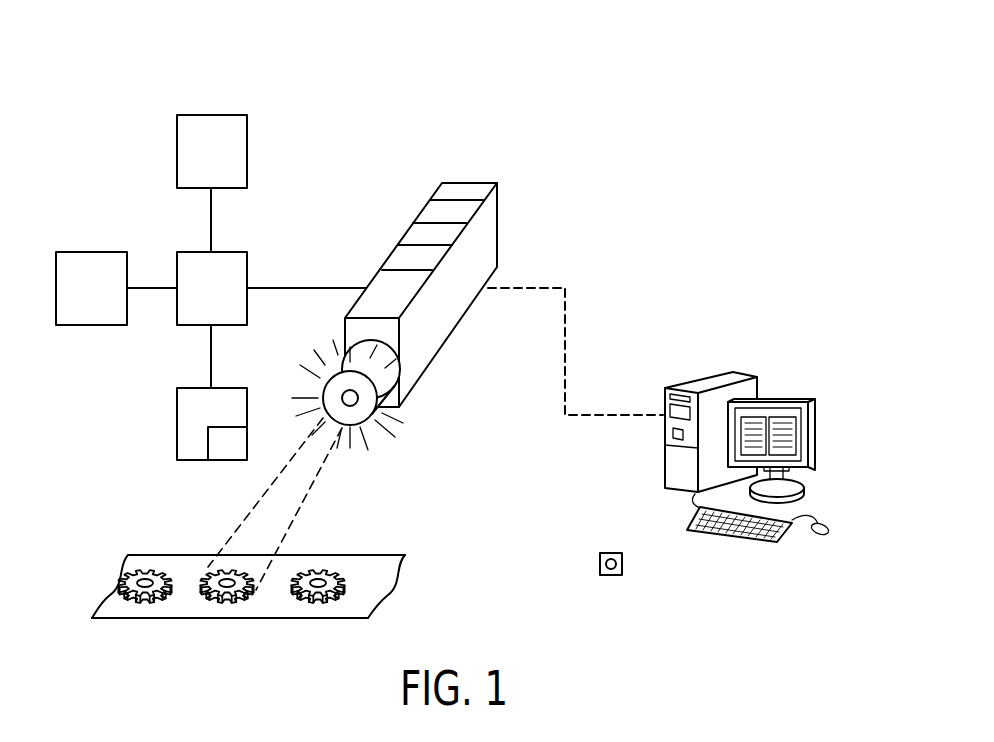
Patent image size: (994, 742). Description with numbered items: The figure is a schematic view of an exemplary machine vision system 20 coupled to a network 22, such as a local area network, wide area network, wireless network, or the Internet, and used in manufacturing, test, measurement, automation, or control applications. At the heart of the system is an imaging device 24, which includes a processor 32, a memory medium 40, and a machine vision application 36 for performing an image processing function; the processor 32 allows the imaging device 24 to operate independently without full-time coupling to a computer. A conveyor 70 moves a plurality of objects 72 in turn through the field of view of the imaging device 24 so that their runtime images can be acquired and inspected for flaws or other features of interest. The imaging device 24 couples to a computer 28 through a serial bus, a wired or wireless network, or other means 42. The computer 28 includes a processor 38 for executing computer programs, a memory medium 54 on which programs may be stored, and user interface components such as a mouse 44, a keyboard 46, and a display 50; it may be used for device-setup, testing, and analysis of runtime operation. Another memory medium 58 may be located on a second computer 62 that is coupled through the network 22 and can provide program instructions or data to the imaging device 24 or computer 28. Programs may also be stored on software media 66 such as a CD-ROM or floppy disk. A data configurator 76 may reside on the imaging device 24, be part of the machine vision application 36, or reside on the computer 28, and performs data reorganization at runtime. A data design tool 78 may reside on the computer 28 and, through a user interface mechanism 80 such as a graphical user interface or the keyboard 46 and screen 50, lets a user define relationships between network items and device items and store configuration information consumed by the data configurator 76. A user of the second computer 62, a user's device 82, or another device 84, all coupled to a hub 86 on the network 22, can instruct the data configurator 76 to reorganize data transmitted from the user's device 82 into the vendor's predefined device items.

The machine vision system 20 is at (593, 239).
The network 22 is at (313, 81).
The imaging device 24 is at (370, 278).
The computer 28 is at (752, 373).
The processor 32 is at (387, 257).
The machine vision application 36 is at (402, 233).
The processor 38 is at (737, 372).
The memory medium 40 is at (417, 212).
The other means 42 is at (565, 362).
The mouse 44 is at (822, 536).
The keyboard 46 is at (730, 540).
The display 50 is at (817, 443).
The memory medium 54 is at (713, 372).
The memory medium 58 is at (227, 448).
The second computer 62 is at (233, 388).
The software media 66 is at (600, 563).
The conveyor 70 is at (165, 620).
The objects 72 is at (145, 570).
The data configurator 76 is at (435, 190).
The data design tool 78 is at (697, 378).
The user interface mechanism 80 is at (795, 438).
The user's device 82 is at (231, 115).
The other device 84 is at (90, 252).
The hub 86 is at (232, 252).